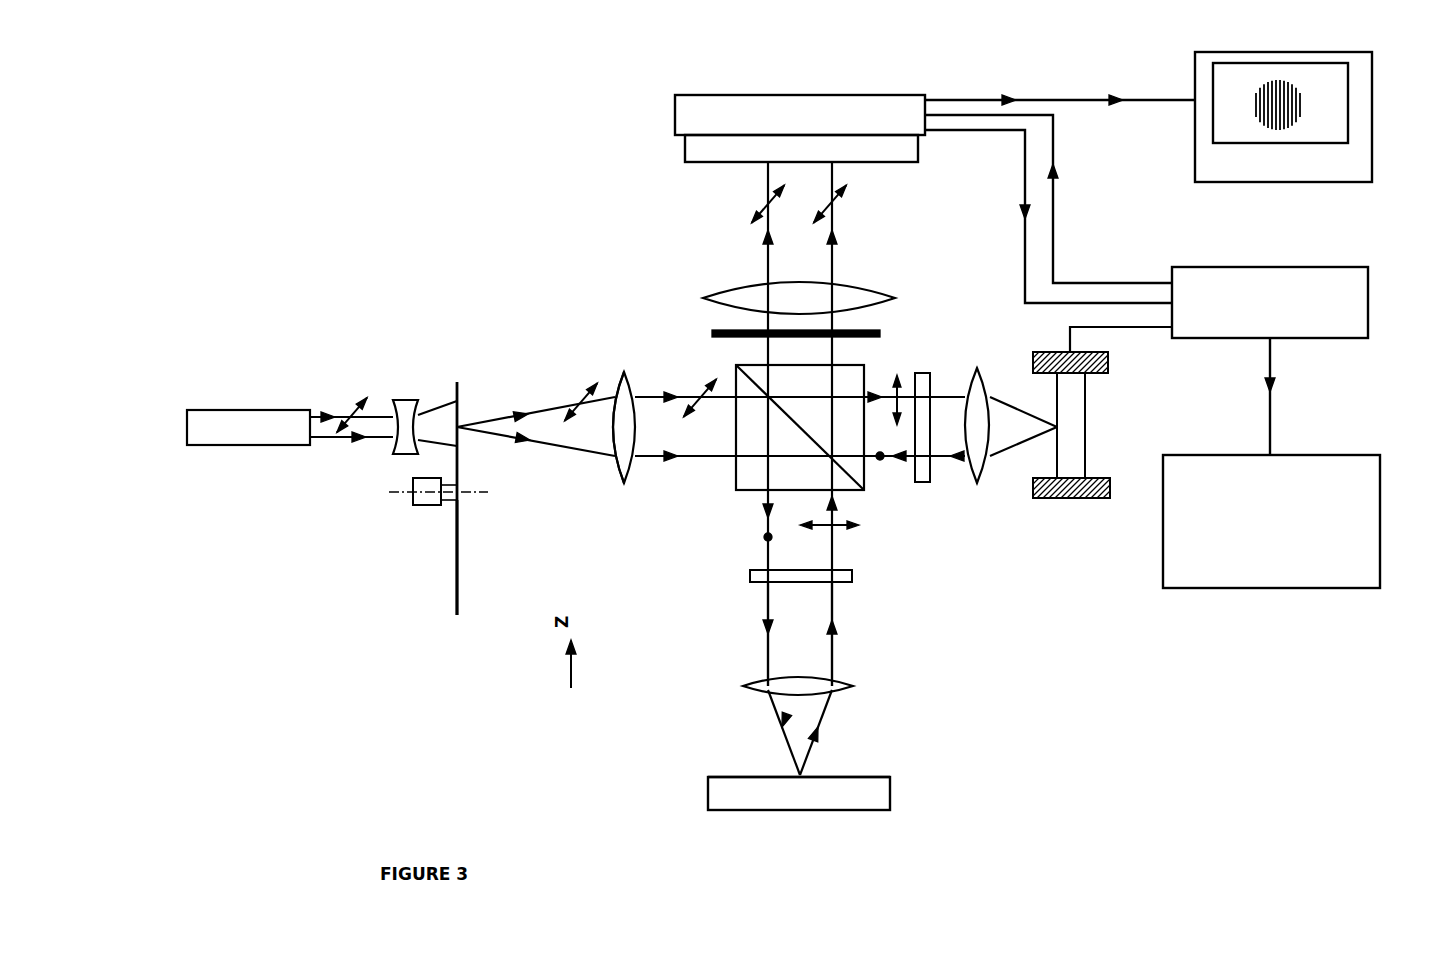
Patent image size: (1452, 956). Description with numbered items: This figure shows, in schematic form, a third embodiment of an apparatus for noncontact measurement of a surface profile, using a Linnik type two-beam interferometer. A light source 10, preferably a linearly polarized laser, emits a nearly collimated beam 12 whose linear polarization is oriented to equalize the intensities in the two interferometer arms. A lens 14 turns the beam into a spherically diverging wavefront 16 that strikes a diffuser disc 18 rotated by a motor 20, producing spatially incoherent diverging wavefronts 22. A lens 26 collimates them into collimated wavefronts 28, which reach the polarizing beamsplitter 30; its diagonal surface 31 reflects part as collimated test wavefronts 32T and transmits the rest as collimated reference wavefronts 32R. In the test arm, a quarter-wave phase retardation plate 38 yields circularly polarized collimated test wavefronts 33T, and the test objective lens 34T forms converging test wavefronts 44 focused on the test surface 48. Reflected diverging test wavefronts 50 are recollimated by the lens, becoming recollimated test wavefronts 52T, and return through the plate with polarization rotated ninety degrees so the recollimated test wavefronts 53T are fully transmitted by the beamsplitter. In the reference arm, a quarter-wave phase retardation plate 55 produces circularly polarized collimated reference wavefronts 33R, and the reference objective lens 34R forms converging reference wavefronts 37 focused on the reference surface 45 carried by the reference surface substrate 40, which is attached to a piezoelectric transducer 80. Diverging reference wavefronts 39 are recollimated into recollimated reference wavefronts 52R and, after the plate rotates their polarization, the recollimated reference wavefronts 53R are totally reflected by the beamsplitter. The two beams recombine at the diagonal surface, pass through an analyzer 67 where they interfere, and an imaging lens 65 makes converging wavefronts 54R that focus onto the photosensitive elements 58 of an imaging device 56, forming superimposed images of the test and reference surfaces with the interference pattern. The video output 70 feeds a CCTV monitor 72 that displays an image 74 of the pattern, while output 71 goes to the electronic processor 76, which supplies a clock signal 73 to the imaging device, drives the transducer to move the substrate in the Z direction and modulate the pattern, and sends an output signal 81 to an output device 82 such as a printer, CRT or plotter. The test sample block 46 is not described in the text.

The light source 10 is at (193, 410).
The beam 12 is at (335, 440).
The lens 14 is at (405, 398).
The spherically diverging wavefront 16 is at (430, 410).
The diffuser disc 18 is at (460, 508).
The motor 20 is at (425, 507).
The spherically diverging wavefronts 22 is at (512, 438).
The lens 26 is at (625, 375).
The collimated wavefronts 28 is at (652, 460).
The polarizing beamsplitter 30 is at (890, 360).
The polarizing beamsplitter diagonal surface 31 is at (810, 432).
The collimated reference wavefronts 32R is at (899, 375).
The collimated test wavefronts 32T is at (765, 552).
The circularly polarized collimated reference wavefronts 33R is at (955, 380).
The circularly polarized collimated test wavefronts 33T is at (767, 597).
The reference objective lens 34R is at (987, 470).
The test objective lens 34T is at (765, 697).
The converging reference wavefronts 37 is at (998, 397).
The quarter-wave phase retardation plate 38 is at (852, 575).
The diverging reference wavefronts 39 is at (1027, 443).
The reference surface substrate 40 is at (1068, 452).
The converging test wavefronts 44 is at (790, 742).
The reference surface 45 is at (1062, 413).
The test sample 46 is at (832, 790).
The test surface 48 is at (725, 777).
The diverging test wavefronts 50 is at (812, 738).
The recollimated reference wavefronts 52R is at (940, 470).
The recollimated test wavefronts 52T is at (832, 605).
The recollimated reference wavefronts 53R is at (868, 463).
The recollimated test wavefronts 53T is at (832, 348).
The converging reference wavefronts 54R is at (835, 250).
The quarter-wave phase retardation plate 55 is at (925, 373).
The imaging device 56 is at (675, 113).
The photosensitive elements 58 is at (695, 163).
The imaging lens 65 is at (838, 285).
The analyzer 67 is at (843, 329).
The video output 70 is at (970, 100).
The output 71 is at (1025, 165).
The CCTV monitor 72 is at (1200, 52).
The clock signal 73 is at (1055, 195).
The image 74 is at (1300, 105).
The electronic processor 76 is at (1368, 298).
The piezoelectric transducer 80 is at (1053, 350).
The output signal 81 is at (1275, 425).
The output device 82 is at (1380, 495).